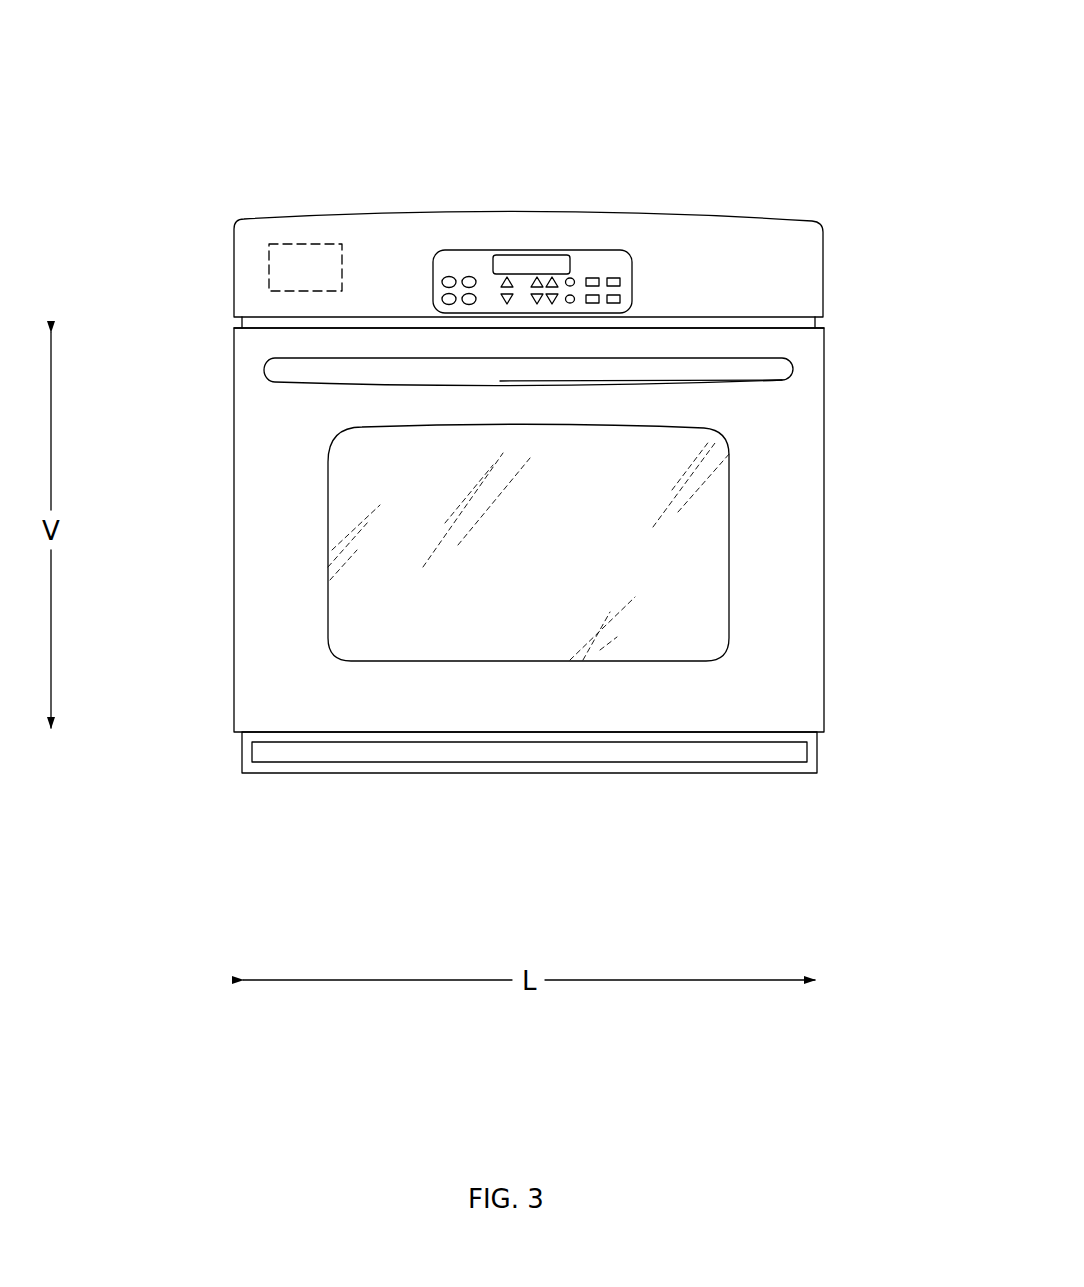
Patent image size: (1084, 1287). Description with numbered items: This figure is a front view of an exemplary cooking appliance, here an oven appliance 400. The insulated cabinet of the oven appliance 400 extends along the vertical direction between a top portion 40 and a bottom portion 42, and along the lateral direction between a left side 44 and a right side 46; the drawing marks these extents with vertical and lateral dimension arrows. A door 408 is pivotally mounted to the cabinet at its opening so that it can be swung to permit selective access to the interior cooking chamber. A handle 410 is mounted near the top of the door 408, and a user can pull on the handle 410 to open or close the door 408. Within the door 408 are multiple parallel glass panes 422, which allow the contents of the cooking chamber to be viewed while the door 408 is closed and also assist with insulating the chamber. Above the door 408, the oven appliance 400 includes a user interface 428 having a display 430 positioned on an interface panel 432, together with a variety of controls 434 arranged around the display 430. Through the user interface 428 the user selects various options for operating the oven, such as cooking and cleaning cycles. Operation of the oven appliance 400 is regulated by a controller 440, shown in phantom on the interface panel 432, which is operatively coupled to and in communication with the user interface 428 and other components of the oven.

The oven appliance 400 is at (240, 82).
The top portion 40 is at (245, 195).
The bottom portion 42 is at (782, 782).
The left side 44 is at (220, 717).
The right side 46 is at (833, 340).
The door 408 is at (778, 520).
The handle 410 is at (775, 369).
The glass panes 422 is at (710, 613).
The user interface 428 is at (593, 262).
The display 430 is at (532, 262).
The interface panel 432 is at (752, 252).
The controls 434 is at (443, 262).
The controller 440 is at (299, 244).